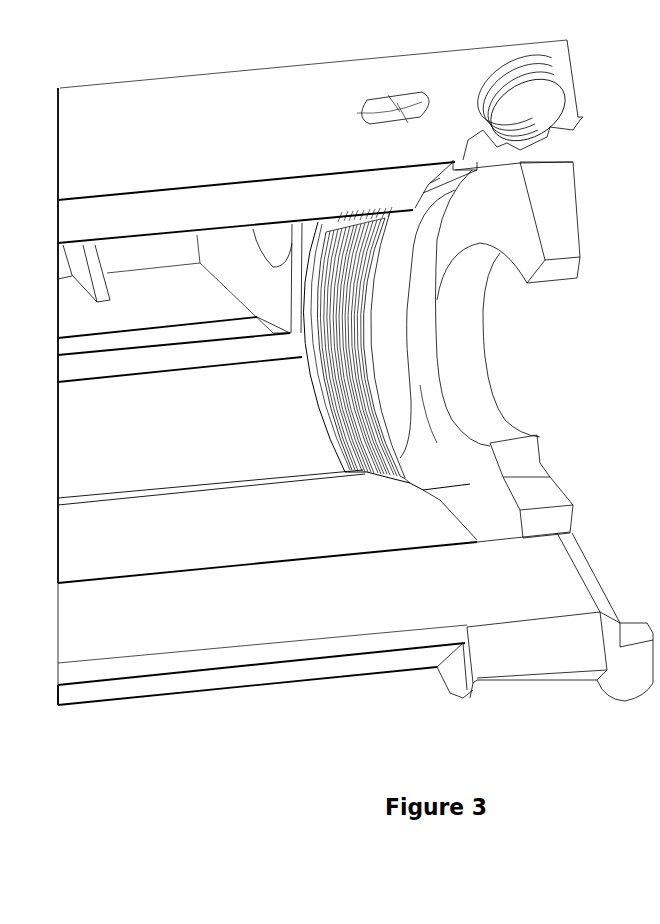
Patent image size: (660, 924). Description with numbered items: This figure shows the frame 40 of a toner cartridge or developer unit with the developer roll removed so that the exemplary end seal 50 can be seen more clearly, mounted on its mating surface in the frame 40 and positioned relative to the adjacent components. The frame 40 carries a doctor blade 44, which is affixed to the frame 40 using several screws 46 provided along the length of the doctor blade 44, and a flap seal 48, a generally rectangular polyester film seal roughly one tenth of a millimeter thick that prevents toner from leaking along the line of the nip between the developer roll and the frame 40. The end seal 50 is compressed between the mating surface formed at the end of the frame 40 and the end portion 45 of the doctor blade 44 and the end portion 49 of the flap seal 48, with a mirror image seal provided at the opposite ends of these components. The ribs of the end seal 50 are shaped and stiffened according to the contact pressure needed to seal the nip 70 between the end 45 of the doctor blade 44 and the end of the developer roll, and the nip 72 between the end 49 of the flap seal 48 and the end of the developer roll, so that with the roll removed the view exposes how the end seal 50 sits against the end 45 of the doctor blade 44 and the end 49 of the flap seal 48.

The frame 40 is at (583, 202).
The doctor blade 44 is at (300, 208).
The end portion of doctor blade 45 is at (430, 183).
The screws 46 is at (553, 82).
The flap seal 48 is at (205, 540).
The end portion of flap seal 49 is at (427, 494).
The end seal 50 is at (305, 394).
The nip 70 is at (378, 214).
The nip 72 is at (353, 468).